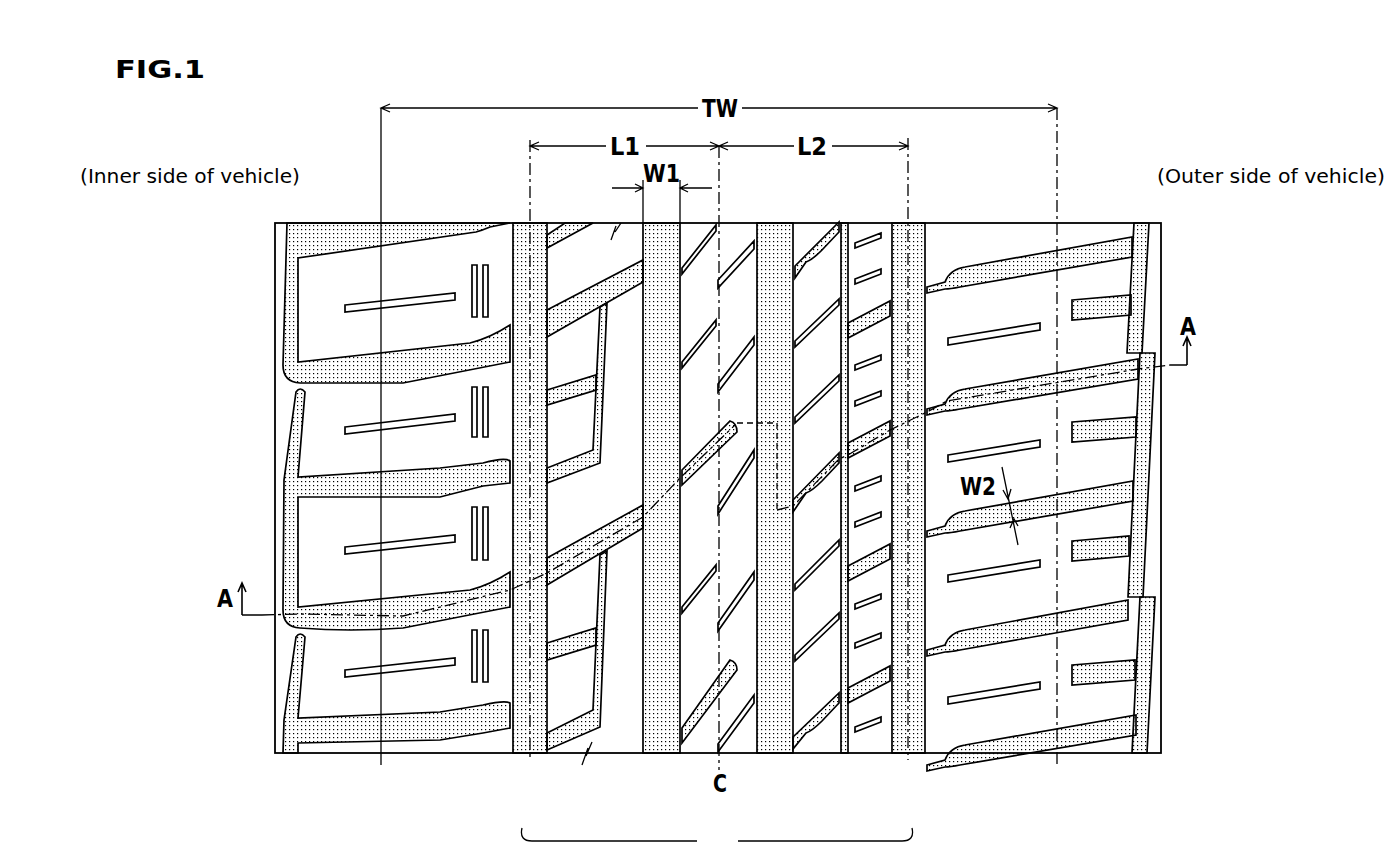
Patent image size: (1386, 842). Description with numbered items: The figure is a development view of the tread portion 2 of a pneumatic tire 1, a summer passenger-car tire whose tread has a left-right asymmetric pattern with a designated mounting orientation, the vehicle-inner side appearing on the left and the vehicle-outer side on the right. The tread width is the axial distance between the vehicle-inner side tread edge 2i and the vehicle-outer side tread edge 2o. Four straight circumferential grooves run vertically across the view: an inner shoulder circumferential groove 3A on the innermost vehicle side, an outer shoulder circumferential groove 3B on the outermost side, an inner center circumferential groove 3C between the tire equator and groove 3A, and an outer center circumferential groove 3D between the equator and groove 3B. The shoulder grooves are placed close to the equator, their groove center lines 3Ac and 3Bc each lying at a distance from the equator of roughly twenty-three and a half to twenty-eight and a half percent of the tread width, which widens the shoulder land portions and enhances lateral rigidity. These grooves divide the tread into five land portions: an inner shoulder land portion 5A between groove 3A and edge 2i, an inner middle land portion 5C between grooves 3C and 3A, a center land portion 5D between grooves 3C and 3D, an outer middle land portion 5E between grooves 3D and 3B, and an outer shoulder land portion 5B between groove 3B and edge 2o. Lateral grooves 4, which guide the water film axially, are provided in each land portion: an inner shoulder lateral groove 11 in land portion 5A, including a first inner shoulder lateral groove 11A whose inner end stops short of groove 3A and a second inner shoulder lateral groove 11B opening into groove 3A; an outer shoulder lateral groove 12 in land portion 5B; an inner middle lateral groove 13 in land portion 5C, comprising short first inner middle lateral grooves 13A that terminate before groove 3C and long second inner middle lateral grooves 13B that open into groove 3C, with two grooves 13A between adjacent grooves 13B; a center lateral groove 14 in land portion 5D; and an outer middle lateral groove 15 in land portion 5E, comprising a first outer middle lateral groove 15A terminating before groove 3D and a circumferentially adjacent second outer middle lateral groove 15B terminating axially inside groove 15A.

The pneumatic tire 1 is at (1100, 210).
The tread portion 2 is at (1015, 218).
The vehicle-inner side tread edge 2i is at (380, 178).
The vehicle-outer side tread edge 2o is at (1058, 178).
The inner shoulder circumferential groove 3A is at (540, 735).
The groove center line of the inner shoulder circumferential groove 3Ac is at (528, 205).
The outer shoulder circumferential groove 3B is at (908, 737).
The groove center line of the outer shoulder circumferential groove 3Bc is at (910, 192).
The inner center circumferential groove 3C is at (667, 736).
The outer center circumferential groove 3D is at (784, 736).
The lateral grooves 4 is at (306, 488).
The inner shoulder land portion 5A is at (444, 269).
The outer shoulder land portion 5B is at (984, 284).
The inner middle land portion 5C is at (584, 269).
The center land portion 5D is at (749, 269).
The outer middle land portion 5E is at (812, 269).
The inner shoulder lateral groove 11 is at (186, 493).
The first inner shoulder lateral groove 11A is at (457, 493).
The second inner shoulder lateral groove 11B is at (437, 605).
The outer shoulder lateral groove 12 is at (1023, 502).
The inner middle lateral groove 13 is at (186, 307).
The first inner middle lateral groove 13A is at (577, 395).
The second inner middle lateral groove 13B is at (583, 310).
The center lateral groove 14 is at (703, 700).
The outer middle lateral groove 15 is at (1250, 550).
The first outer middle lateral groove 15A is at (862, 563).
The second outer middle lateral groove 15B is at (862, 683).